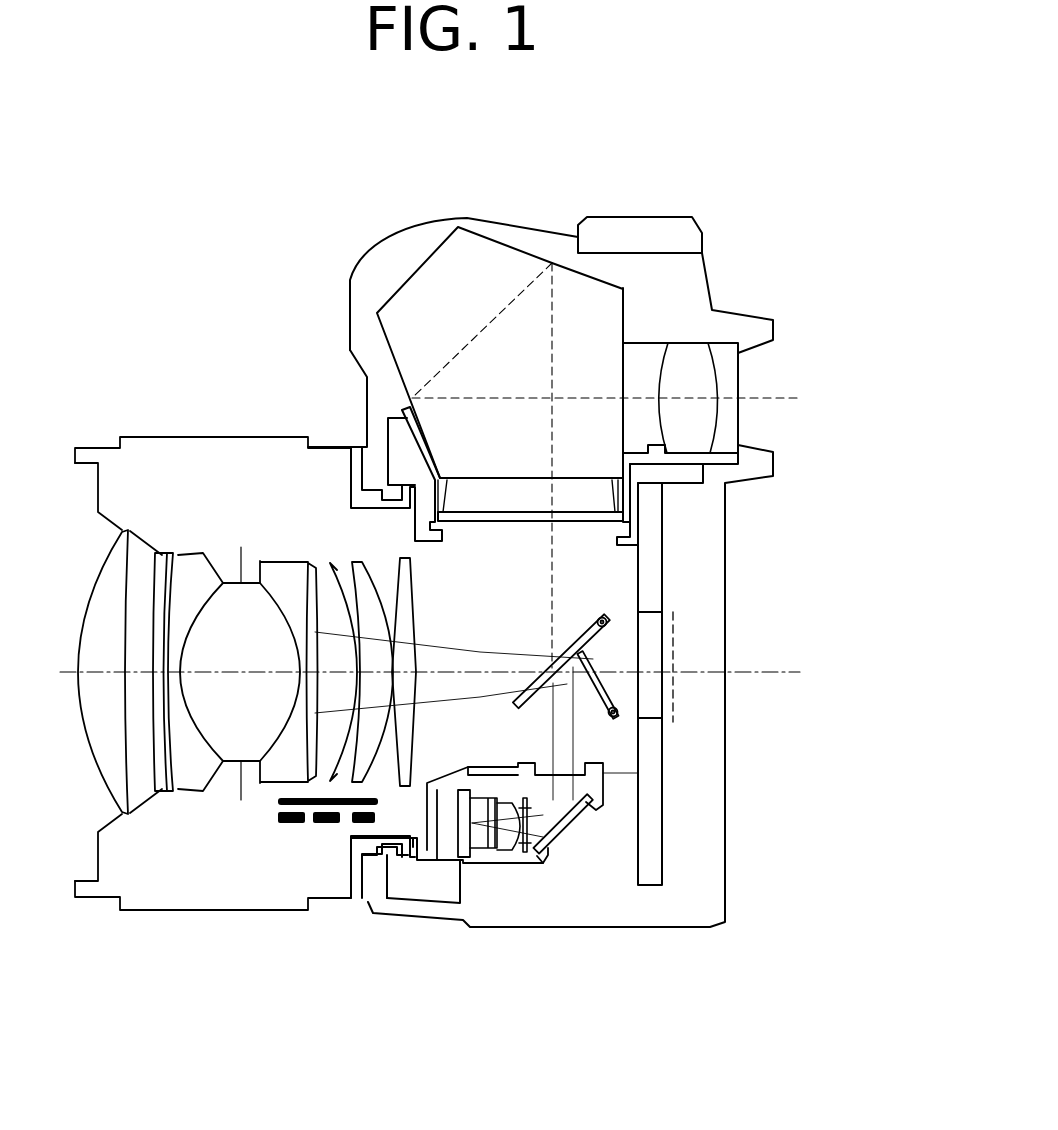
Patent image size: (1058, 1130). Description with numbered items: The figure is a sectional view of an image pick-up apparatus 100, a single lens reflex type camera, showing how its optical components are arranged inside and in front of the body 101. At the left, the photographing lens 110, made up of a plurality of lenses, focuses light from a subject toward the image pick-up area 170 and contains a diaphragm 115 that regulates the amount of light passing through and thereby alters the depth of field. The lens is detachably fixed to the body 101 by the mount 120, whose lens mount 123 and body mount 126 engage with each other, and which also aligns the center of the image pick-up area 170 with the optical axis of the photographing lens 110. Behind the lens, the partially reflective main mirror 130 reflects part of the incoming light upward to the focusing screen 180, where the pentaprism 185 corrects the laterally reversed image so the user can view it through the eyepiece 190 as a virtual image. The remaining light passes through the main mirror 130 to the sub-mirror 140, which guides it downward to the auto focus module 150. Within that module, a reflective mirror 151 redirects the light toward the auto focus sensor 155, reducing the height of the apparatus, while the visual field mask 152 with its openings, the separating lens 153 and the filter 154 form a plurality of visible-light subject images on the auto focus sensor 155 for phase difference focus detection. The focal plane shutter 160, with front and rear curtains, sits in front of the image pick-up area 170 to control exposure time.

The image pick-up apparatus 100 is at (217, 188).
The body 101 is at (687, 930).
The photographing lens 110 is at (245, 637).
The diaphragm 115 is at (240, 560).
The mount 120 is at (349, 929).
The lens mount 123 is at (355, 890).
The body mount 126 is at (373, 888).
The main mirror 130 is at (595, 617).
The sub-mirror 140 is at (593, 658).
The auto focus module 150 is at (534, 893).
The reflective mirror 151 is at (592, 884).
The visual field mask 152 is at (543, 847).
The separating lens 153 is at (507, 850).
The filter 154 is at (492, 850).
The auto focus sensor 155 is at (462, 842).
The focal plane shutter 160 is at (662, 860).
The image pick-up area 170 is at (677, 708).
The focusing screen 180 is at (585, 521).
The pentaprism 185 is at (490, 240).
The eyepiece 190 is at (747, 368).